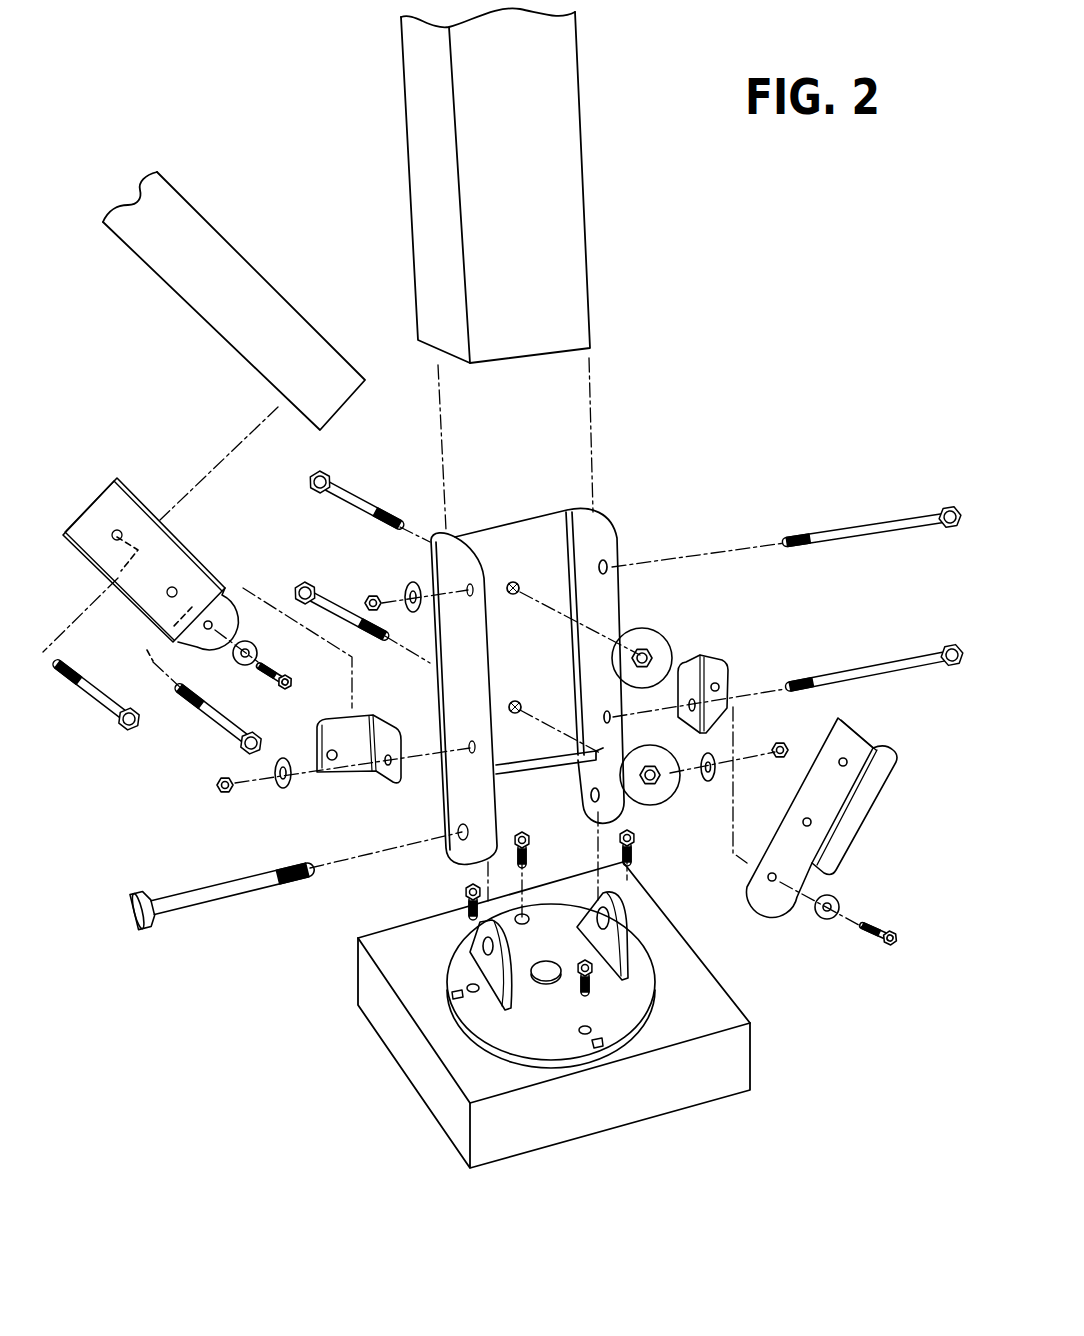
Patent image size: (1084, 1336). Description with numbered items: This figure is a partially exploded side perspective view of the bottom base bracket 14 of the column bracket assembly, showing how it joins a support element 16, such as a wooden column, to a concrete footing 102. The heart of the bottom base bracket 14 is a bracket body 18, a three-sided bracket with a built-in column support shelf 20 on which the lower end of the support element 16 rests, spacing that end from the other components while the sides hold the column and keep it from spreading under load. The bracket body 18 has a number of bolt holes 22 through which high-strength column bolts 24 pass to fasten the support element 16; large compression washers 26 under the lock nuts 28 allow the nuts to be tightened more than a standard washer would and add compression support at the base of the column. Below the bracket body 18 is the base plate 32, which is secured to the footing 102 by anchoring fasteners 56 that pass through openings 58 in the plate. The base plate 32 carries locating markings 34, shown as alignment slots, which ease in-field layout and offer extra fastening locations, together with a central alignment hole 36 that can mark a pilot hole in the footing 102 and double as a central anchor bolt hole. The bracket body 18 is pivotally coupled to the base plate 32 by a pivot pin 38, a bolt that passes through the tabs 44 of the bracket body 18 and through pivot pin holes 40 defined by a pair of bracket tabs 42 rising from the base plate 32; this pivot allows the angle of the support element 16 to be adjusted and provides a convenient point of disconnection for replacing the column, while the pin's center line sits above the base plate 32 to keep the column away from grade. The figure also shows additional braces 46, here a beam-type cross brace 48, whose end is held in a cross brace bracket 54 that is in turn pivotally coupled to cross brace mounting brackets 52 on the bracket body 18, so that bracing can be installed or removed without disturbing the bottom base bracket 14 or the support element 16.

The bottom base bracket 14 is at (718, 442).
The support element 16 is at (552, 243).
The bracket body 18 is at (601, 525).
The column support shelf 20 is at (545, 766).
The bolt holes 22 is at (121, 530).
The column bolts 24 is at (905, 520).
The compression washers 26 is at (650, 640).
The lock nuts 28 is at (226, 794).
The base plate 32 is at (637, 1007).
The locating markings 34 is at (455, 994).
The central alignment hole 36 is at (545, 990).
The pivot pin 38 is at (220, 905).
The pivot pin holes 40 is at (484, 943).
The bracket tabs 42 is at (628, 930).
The tabs 44 is at (456, 790).
The additional braces 46 is at (104, 462).
The cross brace 48 is at (233, 274).
The cross brace mounting brackets 52 is at (380, 776).
The cross brace bracket 54 is at (126, 612).
The anchoring fasteners 56 is at (641, 1002).
The holes 58 is at (471, 982).
The footing 102 is at (467, 1078).